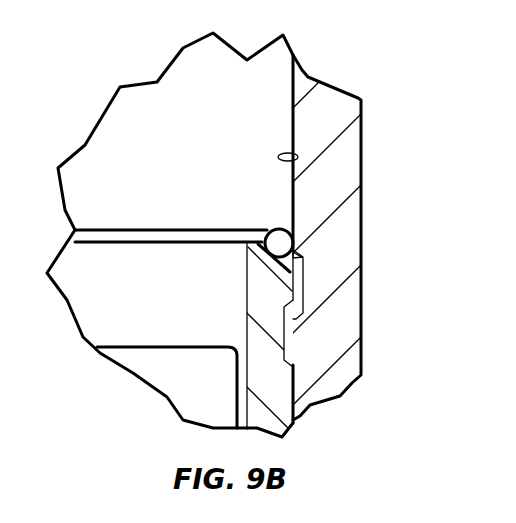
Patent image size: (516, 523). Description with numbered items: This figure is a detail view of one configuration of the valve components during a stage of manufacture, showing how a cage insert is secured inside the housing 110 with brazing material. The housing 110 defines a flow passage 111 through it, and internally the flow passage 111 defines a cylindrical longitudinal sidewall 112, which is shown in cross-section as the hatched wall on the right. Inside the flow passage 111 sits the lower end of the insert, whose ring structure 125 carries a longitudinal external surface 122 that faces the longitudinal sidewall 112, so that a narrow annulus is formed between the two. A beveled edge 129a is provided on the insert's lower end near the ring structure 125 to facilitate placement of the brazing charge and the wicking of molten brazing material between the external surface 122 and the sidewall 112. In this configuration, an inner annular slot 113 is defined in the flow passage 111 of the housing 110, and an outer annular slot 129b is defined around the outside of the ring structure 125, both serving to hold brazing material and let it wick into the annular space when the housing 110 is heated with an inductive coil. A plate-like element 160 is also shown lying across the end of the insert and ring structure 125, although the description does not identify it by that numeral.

The flow passage 111 is at (198, 74).
The housing 110 is at (331, 98).
The longitudinal sidewall 112 is at (298, 157).
The plate / seal member 160 is at (155, 228).
The ring structure 125 is at (83, 302).
The longitudinal external surface 122 is at (295, 375).
The beveled edge 129a is at (301, 254).
The inner annular slot 113 is at (304, 286).
The outer annular slot 129b is at (288, 337).